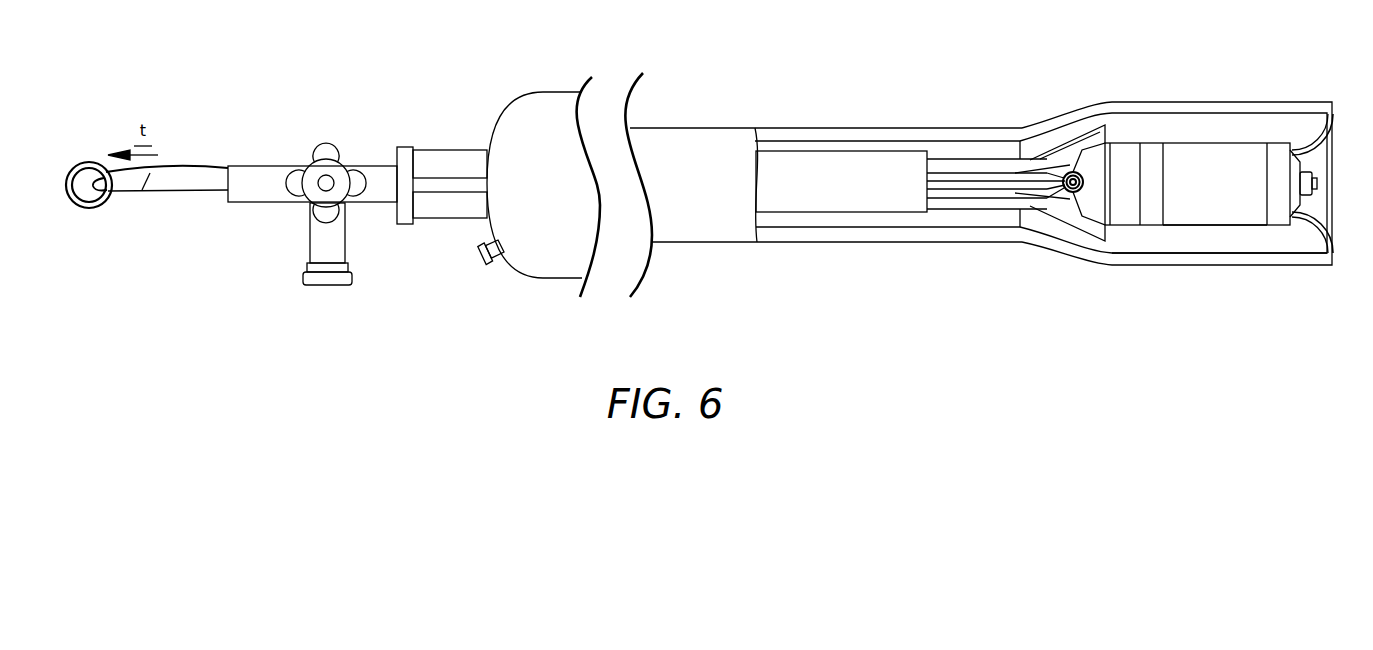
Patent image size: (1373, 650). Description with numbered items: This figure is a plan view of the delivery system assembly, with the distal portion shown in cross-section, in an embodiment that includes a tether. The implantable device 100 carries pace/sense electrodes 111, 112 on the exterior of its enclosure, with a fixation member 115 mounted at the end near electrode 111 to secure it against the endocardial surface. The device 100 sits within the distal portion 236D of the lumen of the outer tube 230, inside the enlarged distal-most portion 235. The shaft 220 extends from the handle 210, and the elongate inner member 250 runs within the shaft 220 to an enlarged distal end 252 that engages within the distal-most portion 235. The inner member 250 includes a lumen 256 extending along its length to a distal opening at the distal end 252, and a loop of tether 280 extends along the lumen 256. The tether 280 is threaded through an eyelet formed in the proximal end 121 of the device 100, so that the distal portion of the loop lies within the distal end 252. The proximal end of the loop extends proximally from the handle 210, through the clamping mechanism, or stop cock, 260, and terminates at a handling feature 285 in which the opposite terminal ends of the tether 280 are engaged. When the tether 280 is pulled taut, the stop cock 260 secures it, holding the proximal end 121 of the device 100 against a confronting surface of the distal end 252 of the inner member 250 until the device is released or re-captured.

The device 100 is at (1237, 190).
The pace/sense electrode 111 is at (1315, 183).
The pace/sense electrode 112 is at (1157, 195).
The fixation member 115 is at (1306, 145).
The proximal end of device 121 is at (1082, 142).
The handle 210 is at (535, 93).
The shaft 220 is at (843, 165).
The outer tube 230 is at (728, 160).
The distal-most portion of outer tube 235 is at (1214, 99).
The distal portion of lumen 236D is at (1262, 243).
The elongate inner member 250 is at (967, 167).
The enlarged distal end of inner member 252 is at (1047, 153).
The lumen of inner member 256 is at (1023, 157).
The clamping mechanism/stop cock 260 is at (387, 282).
The tether 280 is at (147, 173).
The handling feature 285 is at (68, 152).